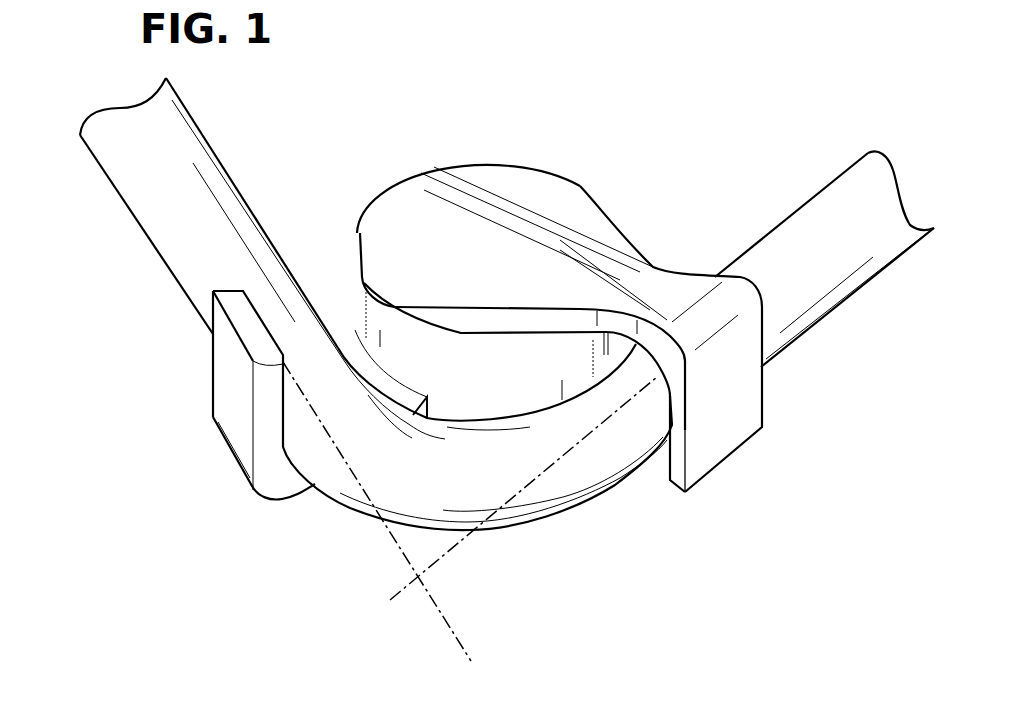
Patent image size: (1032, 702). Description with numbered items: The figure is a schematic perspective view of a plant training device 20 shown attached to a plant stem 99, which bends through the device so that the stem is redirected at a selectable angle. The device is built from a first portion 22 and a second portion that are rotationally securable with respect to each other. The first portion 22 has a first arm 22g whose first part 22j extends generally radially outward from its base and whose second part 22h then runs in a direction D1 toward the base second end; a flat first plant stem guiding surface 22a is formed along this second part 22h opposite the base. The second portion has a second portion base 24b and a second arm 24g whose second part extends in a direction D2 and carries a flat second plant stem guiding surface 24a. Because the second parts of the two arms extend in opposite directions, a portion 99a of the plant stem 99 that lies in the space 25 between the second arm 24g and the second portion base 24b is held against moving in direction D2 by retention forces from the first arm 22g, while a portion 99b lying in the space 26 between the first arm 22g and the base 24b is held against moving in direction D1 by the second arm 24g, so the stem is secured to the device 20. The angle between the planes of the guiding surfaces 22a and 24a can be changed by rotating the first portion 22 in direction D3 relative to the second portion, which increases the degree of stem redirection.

The plant training device 20 is at (596, 160).
The first portion 22 is at (520, 160).
The first plant stem guiding surface 22a is at (668, 433).
The first arm 22g is at (652, 264).
The second part of the first arm 22h is at (706, 441).
The first part of the first arm 22j is at (633, 277).
The second plant stem guiding surface 24a is at (281, 352).
The second portion base 24b is at (461, 362).
The second arm 24g is at (214, 438).
The space 25 is at (343, 262).
The space 26 is at (660, 382).
The plant stem 99 is at (777, 215).
The portion of the plant stem 99a is at (155, 212).
The portion of the plant stem 99b is at (858, 202).
The direction D1 is at (900, 344).
The direction D2 is at (57, 332).
The direction D3 is at (640, 630).